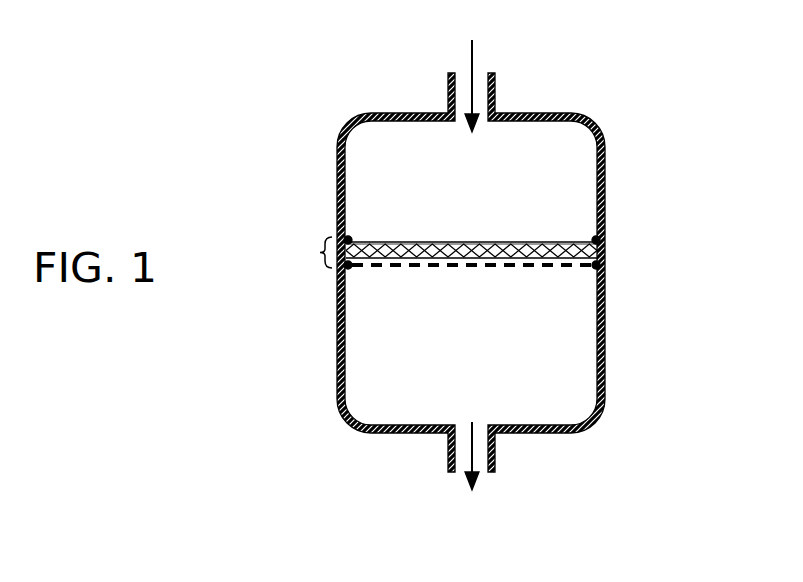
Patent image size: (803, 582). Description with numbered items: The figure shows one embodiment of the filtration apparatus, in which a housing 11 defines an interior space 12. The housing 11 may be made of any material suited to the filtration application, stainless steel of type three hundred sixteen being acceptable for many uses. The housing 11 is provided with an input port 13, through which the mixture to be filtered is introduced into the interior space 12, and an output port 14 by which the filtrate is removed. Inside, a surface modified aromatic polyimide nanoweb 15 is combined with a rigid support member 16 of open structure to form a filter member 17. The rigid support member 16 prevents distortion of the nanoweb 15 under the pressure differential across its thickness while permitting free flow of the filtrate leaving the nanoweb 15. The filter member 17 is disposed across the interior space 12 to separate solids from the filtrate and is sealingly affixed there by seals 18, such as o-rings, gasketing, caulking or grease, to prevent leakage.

The housing 11 is at (362, 112).
The interior space 12 is at (392, 167).
The input port 13 is at (474, 58).
The output port 14 is at (478, 472).
The surface modified aromatic polyimide nanoweb 15 is at (552, 250).
The rigid support member 16 is at (390, 266).
The filter member 17 is at (315, 252).
The seals 18 is at (598, 239).